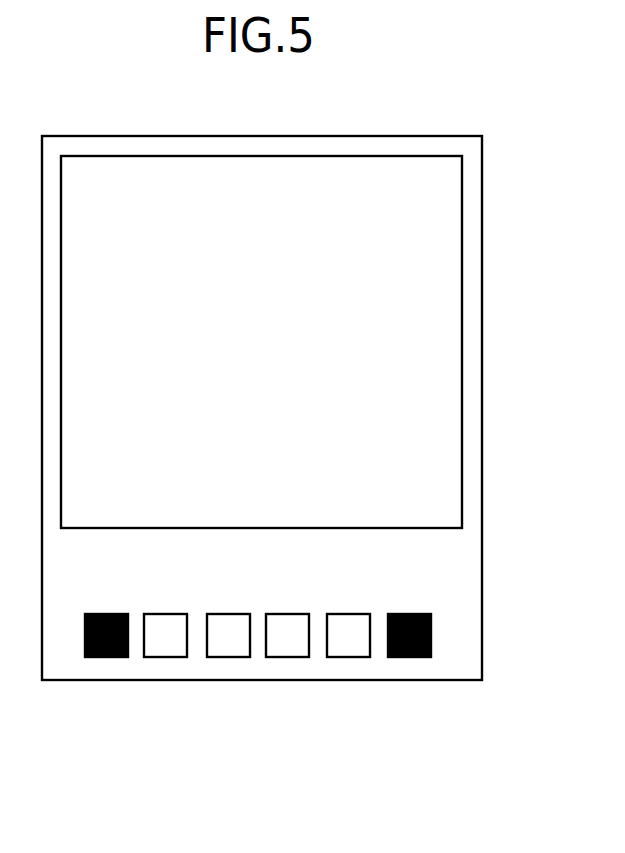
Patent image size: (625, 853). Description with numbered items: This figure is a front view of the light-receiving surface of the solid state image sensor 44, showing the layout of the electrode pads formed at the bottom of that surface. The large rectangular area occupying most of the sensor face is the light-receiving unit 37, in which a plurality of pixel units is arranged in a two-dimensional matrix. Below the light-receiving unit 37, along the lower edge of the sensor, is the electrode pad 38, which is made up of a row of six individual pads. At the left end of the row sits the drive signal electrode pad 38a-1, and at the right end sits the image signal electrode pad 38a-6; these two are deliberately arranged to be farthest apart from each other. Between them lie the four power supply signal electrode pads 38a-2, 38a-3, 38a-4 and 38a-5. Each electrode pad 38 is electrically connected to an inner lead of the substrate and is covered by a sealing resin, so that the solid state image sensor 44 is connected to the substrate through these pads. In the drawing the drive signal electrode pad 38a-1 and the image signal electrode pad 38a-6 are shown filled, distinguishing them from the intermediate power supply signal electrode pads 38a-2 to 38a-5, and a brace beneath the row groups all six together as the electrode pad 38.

The solid state image sensor 44 is at (372, 135).
The light-receiving unit 37 is at (462, 223).
The electrode pad 38 is at (266, 722).
The drive signal electrode pad 38a-1 is at (108, 657).
The power supply signal electrode pad 38a-2 is at (162, 657).
The power supply signal electrode pad 38a-3 is at (227, 657).
The power supply signal electrode pad 38a-4 is at (285, 657).
The power supply signal electrode pad 38a-5 is at (347, 657).
The image signal electrode pad 38a-6 is at (411, 696).